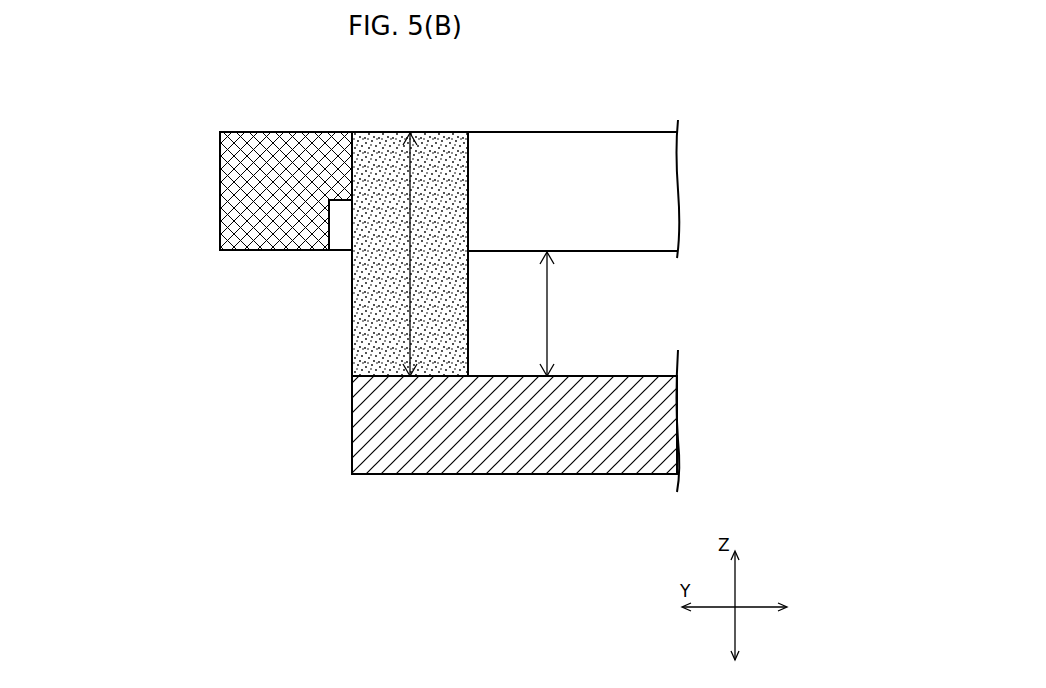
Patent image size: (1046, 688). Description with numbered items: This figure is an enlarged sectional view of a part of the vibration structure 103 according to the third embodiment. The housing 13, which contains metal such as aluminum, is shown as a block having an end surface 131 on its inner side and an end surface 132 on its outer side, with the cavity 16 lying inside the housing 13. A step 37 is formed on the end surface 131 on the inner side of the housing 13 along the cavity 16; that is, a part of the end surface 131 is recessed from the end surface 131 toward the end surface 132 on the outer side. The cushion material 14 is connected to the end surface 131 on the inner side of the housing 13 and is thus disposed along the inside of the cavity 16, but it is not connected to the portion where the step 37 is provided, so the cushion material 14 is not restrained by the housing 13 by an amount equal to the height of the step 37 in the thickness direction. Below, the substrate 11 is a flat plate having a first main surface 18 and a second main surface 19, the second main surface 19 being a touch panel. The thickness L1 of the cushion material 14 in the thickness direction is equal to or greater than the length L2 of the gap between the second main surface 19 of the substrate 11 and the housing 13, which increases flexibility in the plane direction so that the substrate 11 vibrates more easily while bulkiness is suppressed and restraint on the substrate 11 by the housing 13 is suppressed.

The vibration structure 103 is at (230, 93).
The housing 13 is at (263, 132).
The end surface on the outer side of the housing 132 is at (220, 203).
The step 37 is at (341, 215).
The end surface on the inner side of the housing 131 is at (353, 160).
The cushion material 14 is at (351, 272).
The cavity 16 is at (612, 168).
The second main surface 19 is at (645, 375).
The substrate 11 is at (465, 476).
The first main surface 18 is at (564, 477).
The thickness of the cushion material L1 is at (410, 312).
The length of the gap L2 is at (548, 308).